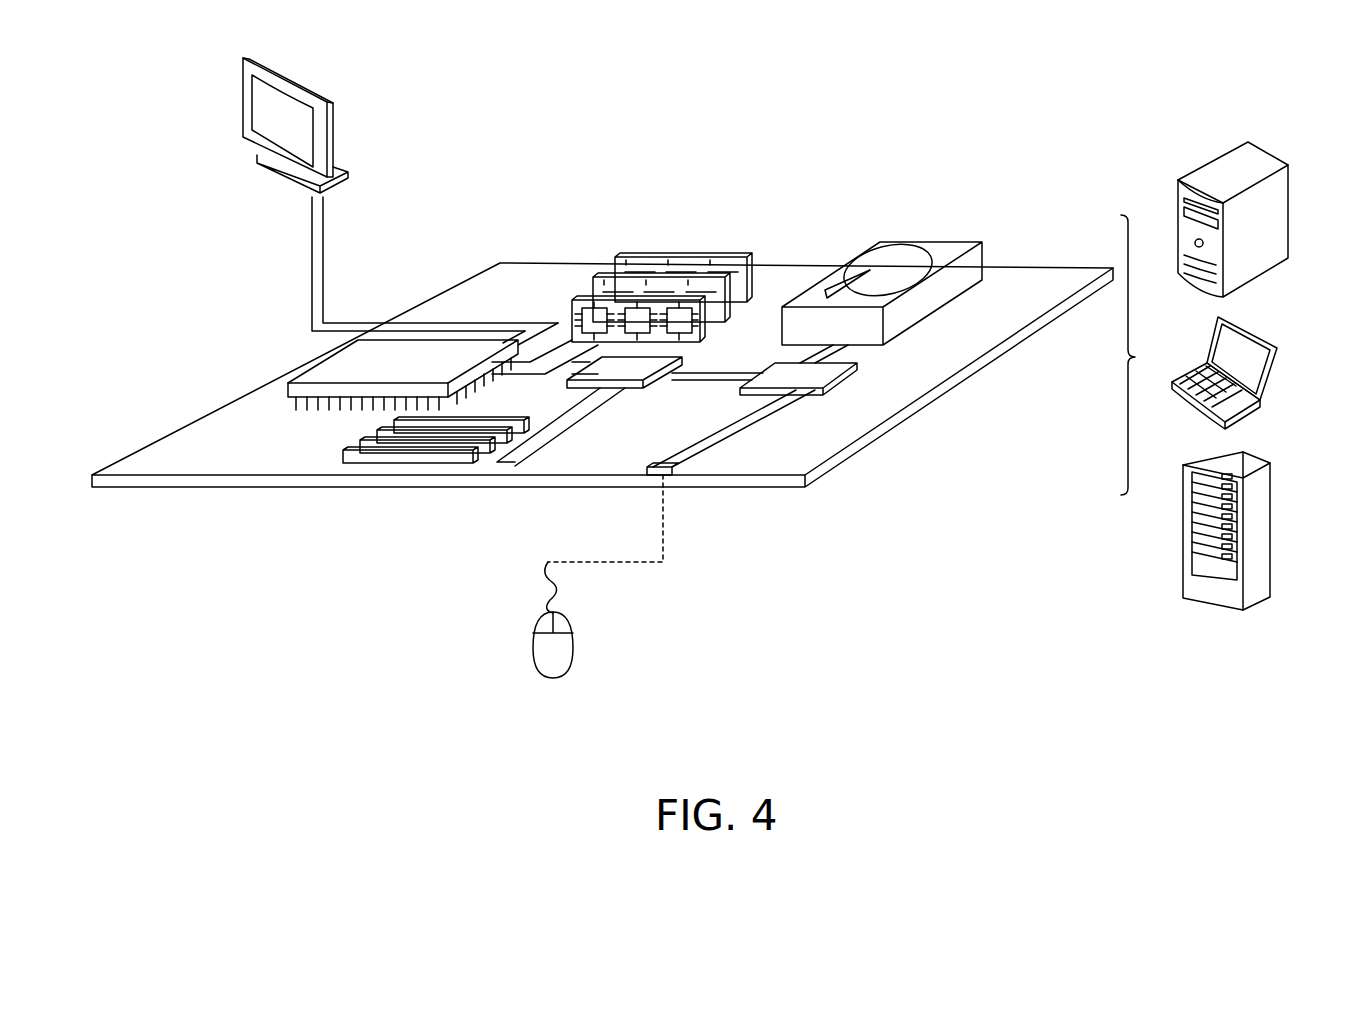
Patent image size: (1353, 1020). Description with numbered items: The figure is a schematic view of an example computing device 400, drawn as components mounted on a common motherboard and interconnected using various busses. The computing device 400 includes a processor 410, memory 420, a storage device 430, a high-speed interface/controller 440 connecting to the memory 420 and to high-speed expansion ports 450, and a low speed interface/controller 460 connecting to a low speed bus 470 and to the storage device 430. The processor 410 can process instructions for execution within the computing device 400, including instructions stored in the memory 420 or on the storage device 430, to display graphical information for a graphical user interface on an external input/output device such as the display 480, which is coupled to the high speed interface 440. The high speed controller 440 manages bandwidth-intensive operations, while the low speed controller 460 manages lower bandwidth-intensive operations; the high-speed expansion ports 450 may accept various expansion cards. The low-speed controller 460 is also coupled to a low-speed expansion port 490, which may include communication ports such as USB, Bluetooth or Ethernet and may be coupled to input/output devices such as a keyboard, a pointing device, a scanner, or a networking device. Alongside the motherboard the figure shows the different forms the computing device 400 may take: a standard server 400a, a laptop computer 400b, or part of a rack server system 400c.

The computing device 400 is at (757, 130).
The standard server 400a is at (1208, 162).
The laptop computer 400b is at (1255, 336).
The rack server system 400c is at (1266, 514).
The processor 410 is at (288, 385).
The memory 420 is at (680, 255).
The storage device 430 is at (927, 242).
The high-speed interface/controller 440 is at (628, 392).
The high-speed expansion ports 450 is at (343, 454).
The low speed interface/controller 460 is at (787, 373).
The low speed bus 470 is at (744, 434).
The display 480 is at (243, 108).
The low-speed expansion port 490 is at (672, 475).